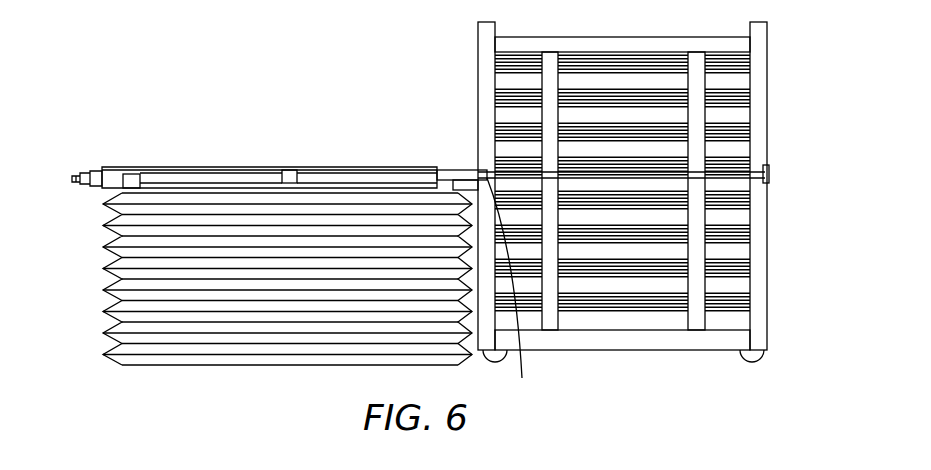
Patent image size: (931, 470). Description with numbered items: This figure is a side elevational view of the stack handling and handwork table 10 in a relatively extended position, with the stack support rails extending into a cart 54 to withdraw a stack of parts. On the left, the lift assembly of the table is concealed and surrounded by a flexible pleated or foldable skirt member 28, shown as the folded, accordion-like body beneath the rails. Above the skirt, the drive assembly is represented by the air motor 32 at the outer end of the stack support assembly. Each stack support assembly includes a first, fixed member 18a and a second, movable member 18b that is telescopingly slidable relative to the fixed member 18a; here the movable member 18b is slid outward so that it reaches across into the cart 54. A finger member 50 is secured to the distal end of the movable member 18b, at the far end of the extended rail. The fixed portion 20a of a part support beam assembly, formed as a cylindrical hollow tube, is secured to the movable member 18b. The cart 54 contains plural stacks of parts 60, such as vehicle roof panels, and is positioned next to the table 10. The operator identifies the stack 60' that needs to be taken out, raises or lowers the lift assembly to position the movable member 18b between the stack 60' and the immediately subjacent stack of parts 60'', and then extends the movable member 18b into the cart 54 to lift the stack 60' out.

The stack handling and handwork table 10 is at (210, 149).
The fixed member 18a is at (347, 178).
The air motor 32 is at (86, 172).
The foldable skirt member 28 is at (137, 352).
The cart 54 is at (768, 341).
The stacks of parts 60 is at (655, 183).
The stack to be taken out 60' is at (656, 147).
The immediately subjacent stack of parts 60'' is at (658, 237).
The movable member 18b is at (750, 199).
The finger member 50 is at (768, 170).
The fixed portion 20a is at (515, 290).